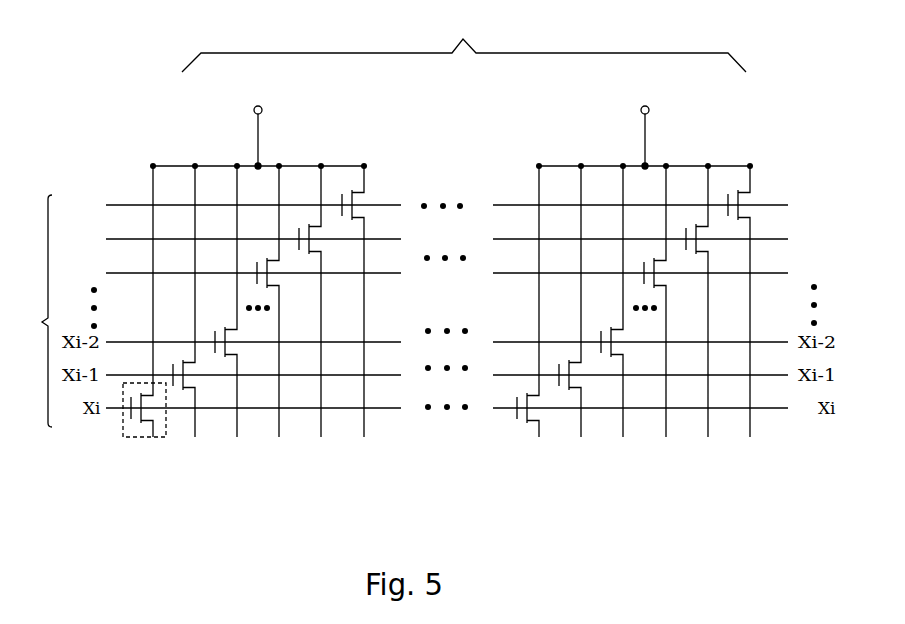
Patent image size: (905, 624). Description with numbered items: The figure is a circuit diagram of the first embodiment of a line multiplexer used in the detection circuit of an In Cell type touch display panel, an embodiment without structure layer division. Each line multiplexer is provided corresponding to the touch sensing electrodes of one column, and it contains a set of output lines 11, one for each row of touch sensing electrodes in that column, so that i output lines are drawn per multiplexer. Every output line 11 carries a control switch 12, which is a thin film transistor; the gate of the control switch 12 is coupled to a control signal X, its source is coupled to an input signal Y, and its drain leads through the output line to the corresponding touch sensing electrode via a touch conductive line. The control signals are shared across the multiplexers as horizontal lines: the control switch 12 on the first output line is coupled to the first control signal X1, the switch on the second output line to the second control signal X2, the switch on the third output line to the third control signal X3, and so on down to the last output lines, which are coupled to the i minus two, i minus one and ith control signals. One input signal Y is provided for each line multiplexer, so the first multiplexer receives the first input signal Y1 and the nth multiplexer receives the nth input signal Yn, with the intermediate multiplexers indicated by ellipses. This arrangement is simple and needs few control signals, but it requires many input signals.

The output line 11 is at (152, 183).
The control switch 12 is at (145, 437).
The control signal X is at (38, 311).
The input signal Y is at (464, 43).
The first control signal X1 is at (455, 205).
The second control signal X2 is at (455, 239).
The third control signal X3 is at (455, 273).
The first input signal Y1 is at (262, 127).
The nth input signal Yn is at (647, 127).